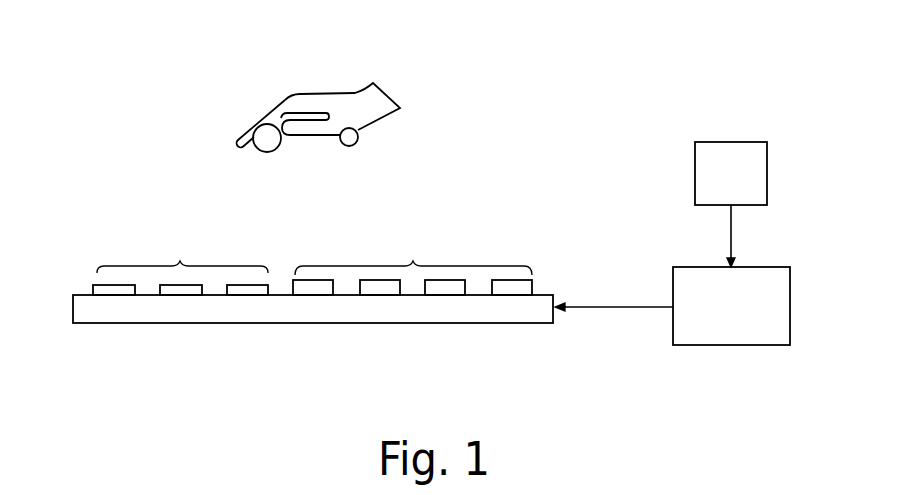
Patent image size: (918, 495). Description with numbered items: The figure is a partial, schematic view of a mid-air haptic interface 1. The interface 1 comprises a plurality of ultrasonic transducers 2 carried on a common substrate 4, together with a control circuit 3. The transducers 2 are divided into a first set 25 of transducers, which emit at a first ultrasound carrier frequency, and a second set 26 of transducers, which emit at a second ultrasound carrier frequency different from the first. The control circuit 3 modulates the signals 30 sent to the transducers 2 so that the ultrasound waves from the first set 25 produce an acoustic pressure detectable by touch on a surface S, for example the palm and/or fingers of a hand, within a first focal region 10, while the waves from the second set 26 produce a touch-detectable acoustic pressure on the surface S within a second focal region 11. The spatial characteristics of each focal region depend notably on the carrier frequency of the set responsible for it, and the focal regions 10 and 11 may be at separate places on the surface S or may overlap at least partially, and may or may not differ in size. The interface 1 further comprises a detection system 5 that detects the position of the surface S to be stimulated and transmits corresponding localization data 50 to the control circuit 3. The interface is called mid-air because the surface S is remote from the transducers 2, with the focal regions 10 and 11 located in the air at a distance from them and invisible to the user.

The haptic interface 1 is at (100, 117).
The ultrasonic transducers 2 is at (243, 297).
The control circuit 3 is at (765, 308).
The substrate 4 is at (88, 308).
The detection system 5 is at (753, 172).
The first focal region 10 is at (358, 143).
The second focal region 11 is at (267, 133).
The first set of transducers 25 is at (182, 254).
The second set of transducers 26 is at (413, 254).
The signals 30 is at (613, 308).
The localization data 50 is at (733, 225).
The surface S is at (370, 107).